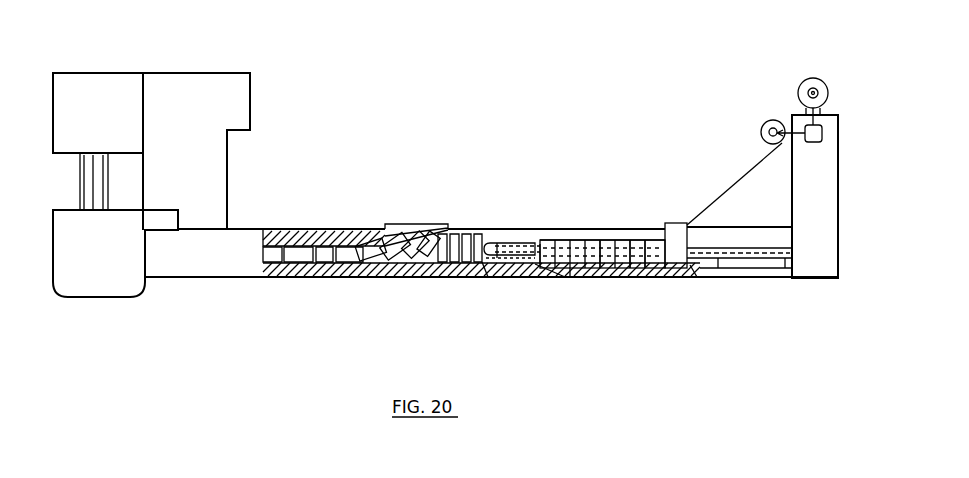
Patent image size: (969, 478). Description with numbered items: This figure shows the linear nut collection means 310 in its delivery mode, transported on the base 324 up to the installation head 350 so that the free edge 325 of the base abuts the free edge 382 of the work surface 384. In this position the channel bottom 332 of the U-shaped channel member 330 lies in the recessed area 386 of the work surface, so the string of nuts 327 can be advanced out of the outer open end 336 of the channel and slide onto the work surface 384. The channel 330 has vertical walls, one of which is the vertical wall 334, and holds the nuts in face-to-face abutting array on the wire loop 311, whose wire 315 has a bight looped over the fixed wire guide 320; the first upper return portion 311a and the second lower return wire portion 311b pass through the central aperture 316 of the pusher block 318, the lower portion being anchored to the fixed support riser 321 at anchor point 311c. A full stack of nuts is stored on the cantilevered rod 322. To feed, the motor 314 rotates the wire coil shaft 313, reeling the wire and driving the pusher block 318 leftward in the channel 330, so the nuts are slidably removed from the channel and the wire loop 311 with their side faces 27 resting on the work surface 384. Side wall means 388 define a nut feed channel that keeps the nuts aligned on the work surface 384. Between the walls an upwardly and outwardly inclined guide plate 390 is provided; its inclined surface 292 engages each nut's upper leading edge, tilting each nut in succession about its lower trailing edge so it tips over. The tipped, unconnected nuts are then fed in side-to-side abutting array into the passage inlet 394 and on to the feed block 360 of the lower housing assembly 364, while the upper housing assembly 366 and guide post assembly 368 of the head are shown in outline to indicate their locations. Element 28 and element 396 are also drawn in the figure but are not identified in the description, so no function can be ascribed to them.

The installation head 350 is at (177, 66).
The upper housing assembly 366 is at (112, 124).
The guide post assembly 368 is at (86, 173).
The lower housing assembly 364 is at (112, 284).
The feed block 360 is at (283, 230).
The passage inlet 394 is at (340, 232).
The block 28 is at (375, 232).
The side wall means 388 is at (394, 232).
The inclined surface 292 is at (410, 235).
The guide plate 390 is at (430, 222).
The outer open end of the channel 336 is at (483, 233).
The fixed wire guide 320 is at (495, 244).
The free edge of base 325 is at (535, 270).
The channel bottom 332 is at (497, 275).
The recessed area 386 is at (483, 270).
The free edge of work surface 382 is at (545, 275).
The base 324 is at (606, 270).
The wire loop 311 is at (536, 240).
The U-shaped channel member 330 is at (572, 222).
The first upper return portion of the wire loop 311a is at (605, 245).
The vertical wall 334 is at (630, 245).
The string of nuts 327 is at (640, 245).
The central aperture 316 is at (690, 240).
The cantilevered rod 322 is at (755, 250).
The second lower return wire portion 311b is at (571, 278).
The wire anchor point 311c is at (786, 270).
The pusher block 318 is at (697, 276).
The fixed support riser 321 is at (838, 158).
The motor 314 is at (818, 78).
The shaft 313 is at (758, 122).
The wire 315 is at (720, 193).
The linear nut collection means 310 is at (701, 130).
The block 396 is at (318, 266).
The side faces 27 is at (375, 278).
The work surface 384 is at (410, 264).